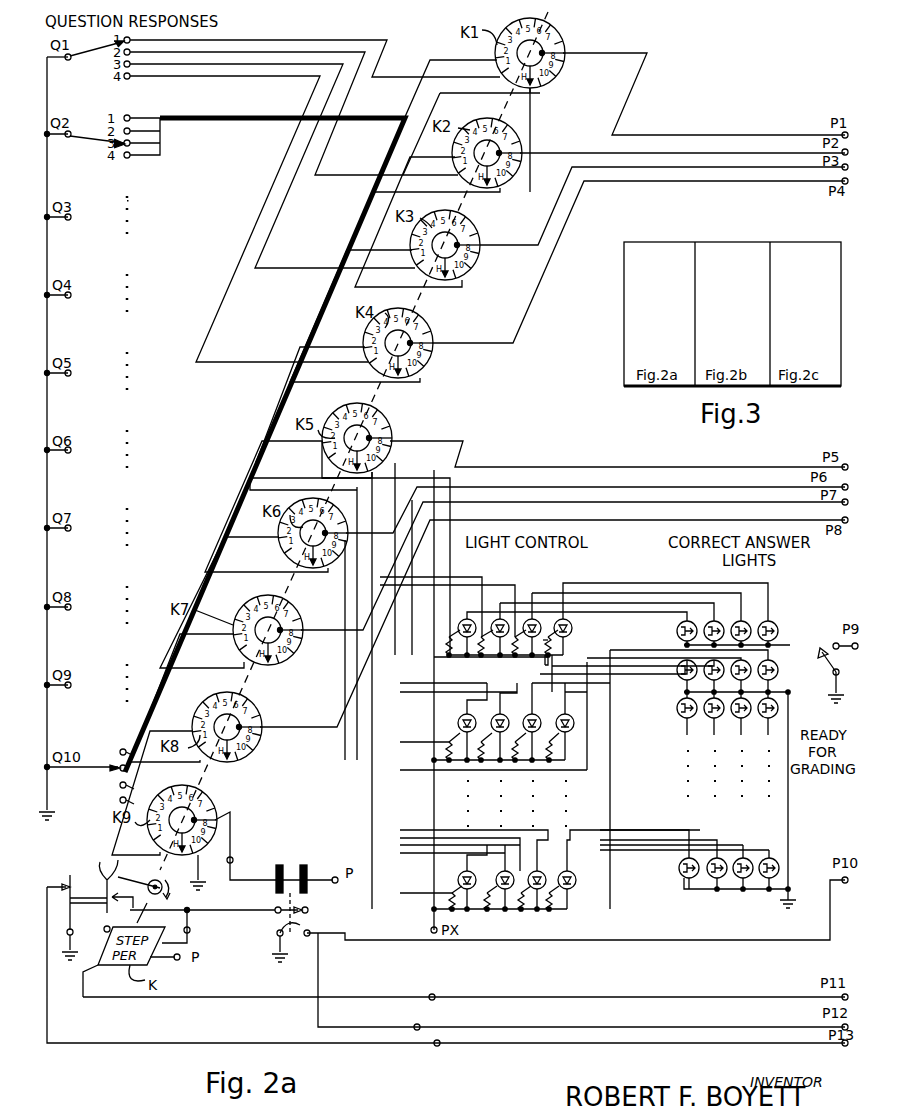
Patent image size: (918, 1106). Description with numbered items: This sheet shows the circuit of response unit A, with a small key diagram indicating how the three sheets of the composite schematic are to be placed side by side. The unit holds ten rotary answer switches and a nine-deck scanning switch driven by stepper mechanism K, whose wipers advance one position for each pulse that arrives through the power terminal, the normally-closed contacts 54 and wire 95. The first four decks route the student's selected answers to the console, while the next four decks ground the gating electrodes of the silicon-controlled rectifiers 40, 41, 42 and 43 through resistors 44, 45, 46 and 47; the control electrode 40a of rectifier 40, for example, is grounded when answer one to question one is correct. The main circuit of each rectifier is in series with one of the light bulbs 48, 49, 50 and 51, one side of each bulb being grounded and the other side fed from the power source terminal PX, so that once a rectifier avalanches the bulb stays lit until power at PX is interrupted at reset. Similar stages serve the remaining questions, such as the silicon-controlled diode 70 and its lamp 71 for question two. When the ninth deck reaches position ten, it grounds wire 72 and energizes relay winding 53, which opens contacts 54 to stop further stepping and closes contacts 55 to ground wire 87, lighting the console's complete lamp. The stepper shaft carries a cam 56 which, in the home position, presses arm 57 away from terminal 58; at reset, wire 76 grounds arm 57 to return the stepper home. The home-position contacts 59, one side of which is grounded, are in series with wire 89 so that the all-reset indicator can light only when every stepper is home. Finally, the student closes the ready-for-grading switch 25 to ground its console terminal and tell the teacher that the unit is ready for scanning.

The ready-for-grading switch 25 is at (830, 675).
The silicon-controlled rectifier 40 is at (462, 622).
The control electrode 40a is at (449, 641).
The silicon-controlled rectifier 41 is at (491, 622).
The silicon-controlled rectifier 42 is at (540, 622).
The silicon-controlled rectifier 43 is at (572, 626).
The resistor 44 is at (449, 648).
The resistor 45 is at (492, 652).
The resistor 46 is at (528, 652).
The resistor 47 is at (552, 650).
The light bulb 48 is at (675, 638).
The light bulb 49 is at (712, 640).
The light bulb 50 is at (738, 640).
The light bulb 51 is at (760, 636).
The relay winding 53 is at (290, 870).
The normally-closed contacts 54 is at (305, 908).
The contacts 55 is at (305, 928).
The cam 56 is at (155, 880).
The arm 57 is at (107, 882).
The terminal 58 is at (125, 912).
The contacts 59 is at (70, 885).
The silicon-controlled diode 70 is at (537, 735).
The lamp 71 is at (776, 665).
The wire 72 is at (233, 860).
The reset wire 76 is at (434, 994).
The wire 87 is at (417, 1024).
The wire 89 is at (434, 1046).
The wire 95 is at (190, 930).